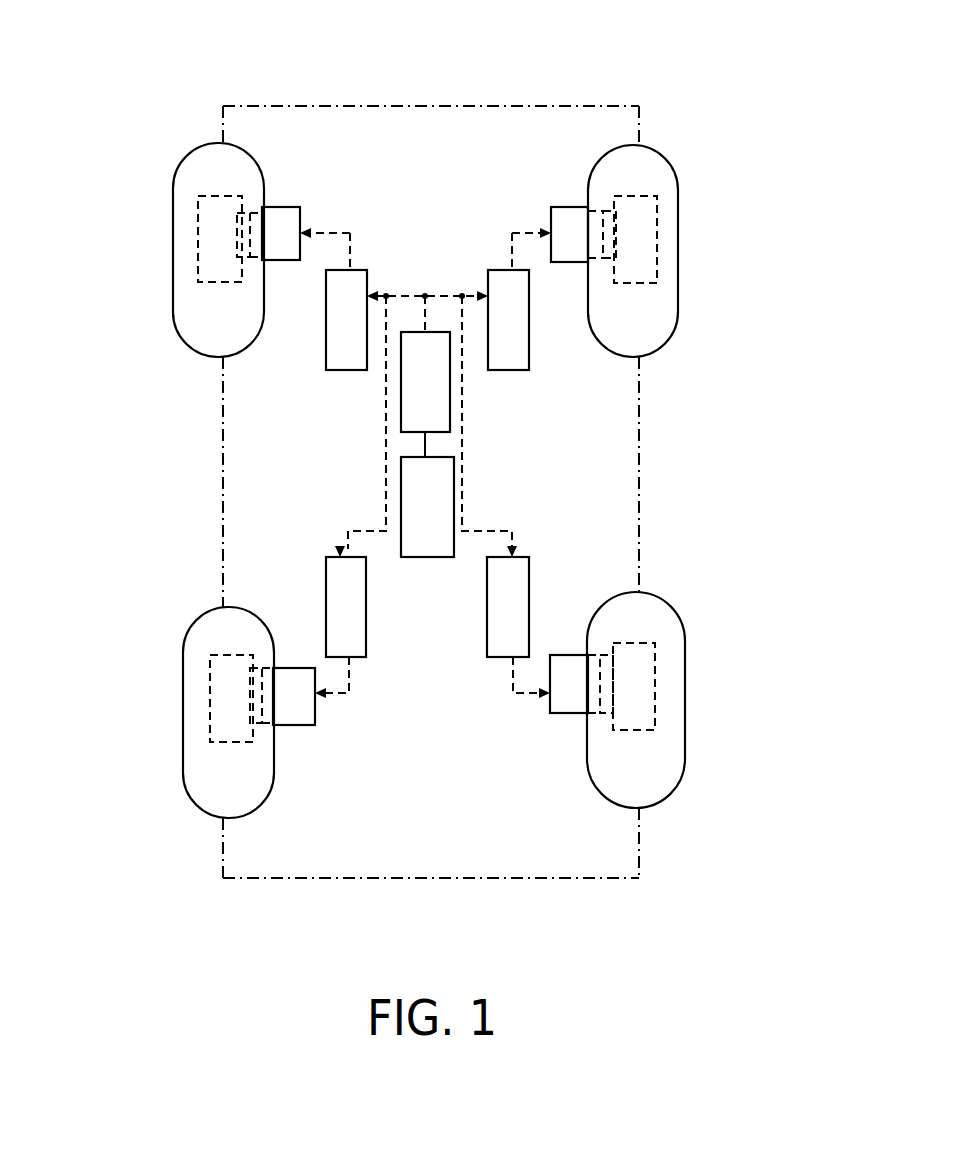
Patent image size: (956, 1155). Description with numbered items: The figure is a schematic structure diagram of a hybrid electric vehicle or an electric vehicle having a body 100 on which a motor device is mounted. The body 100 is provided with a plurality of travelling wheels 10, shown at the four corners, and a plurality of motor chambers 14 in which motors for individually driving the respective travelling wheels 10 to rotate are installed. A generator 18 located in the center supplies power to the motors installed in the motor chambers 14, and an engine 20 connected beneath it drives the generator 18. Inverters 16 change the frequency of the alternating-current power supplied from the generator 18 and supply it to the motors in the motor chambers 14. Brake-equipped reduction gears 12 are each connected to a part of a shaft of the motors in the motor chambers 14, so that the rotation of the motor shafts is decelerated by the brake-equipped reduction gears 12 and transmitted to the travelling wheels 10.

The body 100 is at (388, 35).
The travelling wheel 10 is at (173, 295).
The brake-equipped reduction gear 12 is at (198, 230).
The motor chamber 14 is at (290, 207).
The inverter 16 is at (326, 357).
The generator 18 is at (450, 395).
The engine 20 is at (425, 530).